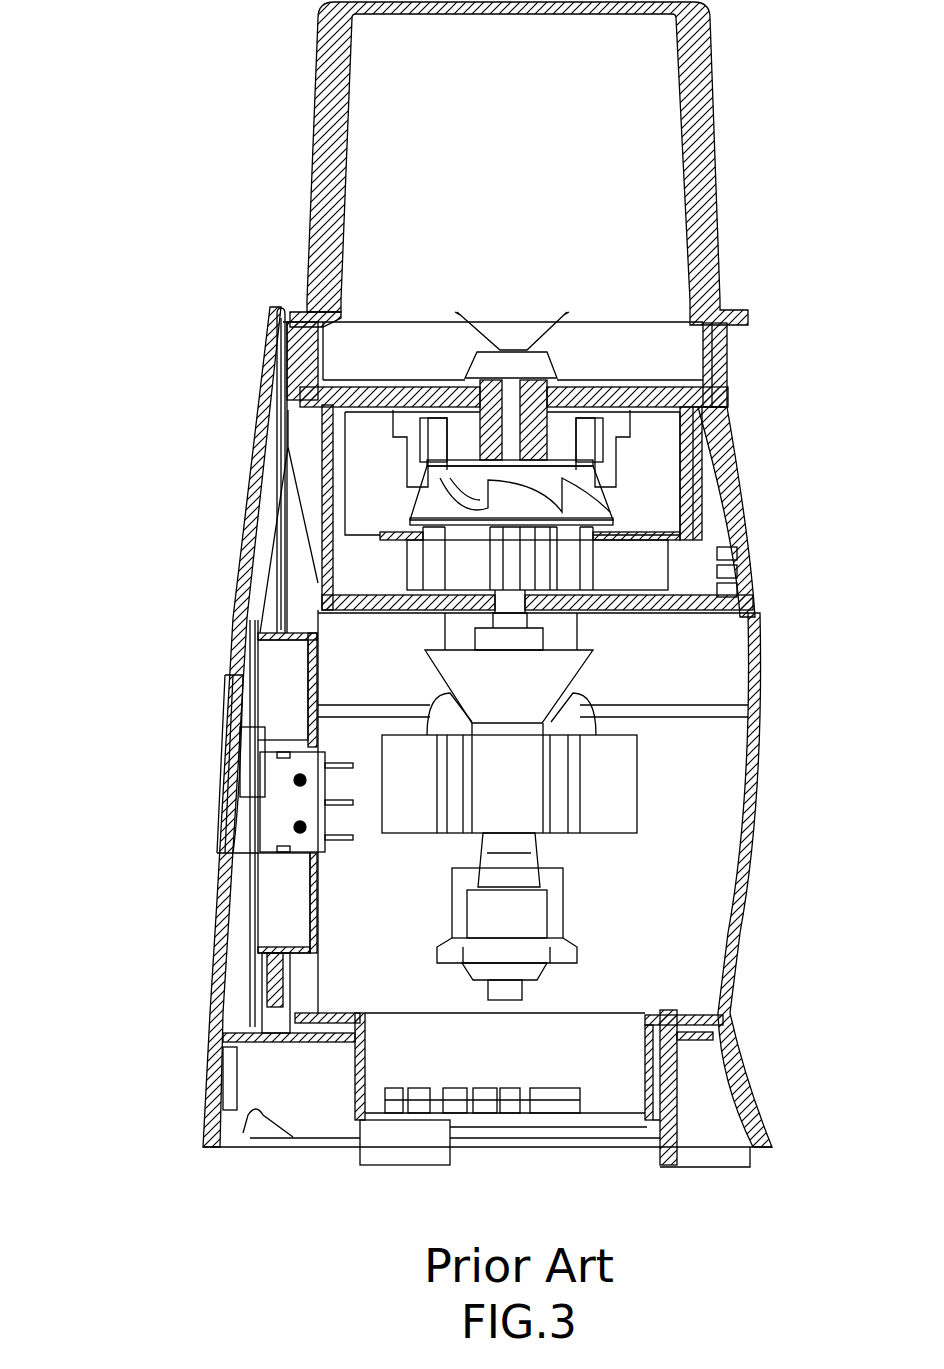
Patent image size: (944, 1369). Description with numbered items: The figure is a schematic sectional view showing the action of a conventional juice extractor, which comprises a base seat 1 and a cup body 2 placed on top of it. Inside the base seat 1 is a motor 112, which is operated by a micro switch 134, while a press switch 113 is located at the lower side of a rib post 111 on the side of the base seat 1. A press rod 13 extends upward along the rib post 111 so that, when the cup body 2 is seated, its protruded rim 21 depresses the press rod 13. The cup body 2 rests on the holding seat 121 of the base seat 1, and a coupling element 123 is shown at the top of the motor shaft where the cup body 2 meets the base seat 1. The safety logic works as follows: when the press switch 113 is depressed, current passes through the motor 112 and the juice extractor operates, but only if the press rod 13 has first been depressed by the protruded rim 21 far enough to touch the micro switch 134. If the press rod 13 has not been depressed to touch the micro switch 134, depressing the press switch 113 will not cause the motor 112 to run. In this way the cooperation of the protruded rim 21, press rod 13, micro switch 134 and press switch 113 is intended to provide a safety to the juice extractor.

The base seat 1 is at (118, 550).
The cup body 2 is at (307, 122).
The protruded rim 21 is at (297, 311).
The press rod 13 is at (268, 362).
The rib post 111 is at (250, 461).
The motor 112 is at (640, 801).
The press switch 113 is at (240, 778).
The holding seat 121 is at (728, 345).
The blade coupler 123 is at (560, 314).
The micro switch 134 is at (228, 815).